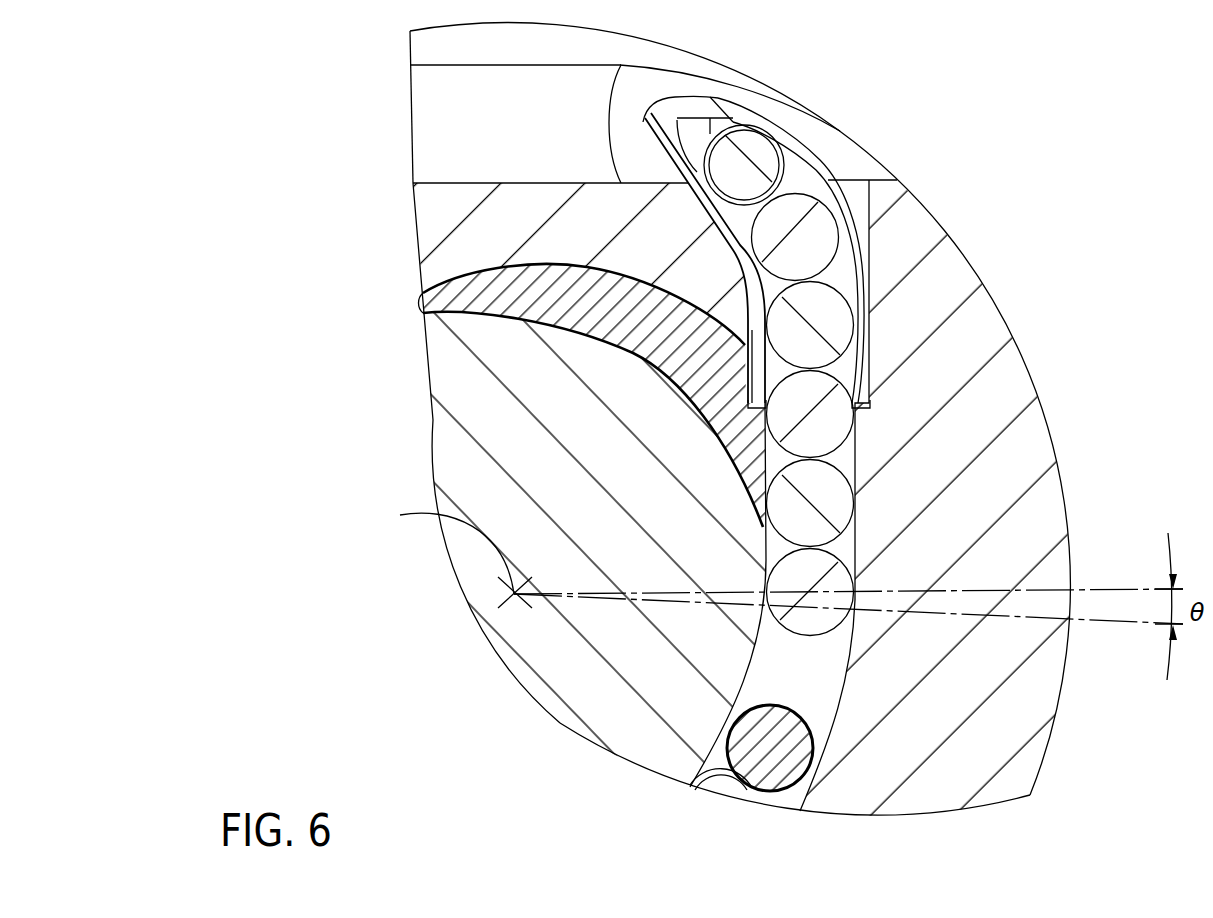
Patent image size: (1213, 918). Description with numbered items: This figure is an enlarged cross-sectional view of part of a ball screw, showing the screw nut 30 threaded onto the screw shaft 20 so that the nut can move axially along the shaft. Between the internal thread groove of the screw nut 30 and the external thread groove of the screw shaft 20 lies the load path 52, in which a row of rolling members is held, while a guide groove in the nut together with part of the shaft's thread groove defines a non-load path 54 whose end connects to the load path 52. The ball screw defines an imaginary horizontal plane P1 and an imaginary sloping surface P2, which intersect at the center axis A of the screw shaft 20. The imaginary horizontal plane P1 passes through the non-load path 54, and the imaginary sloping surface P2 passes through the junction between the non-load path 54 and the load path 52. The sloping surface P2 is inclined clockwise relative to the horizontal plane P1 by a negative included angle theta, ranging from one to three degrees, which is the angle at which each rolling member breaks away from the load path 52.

The screw shaft 20 is at (567, 668).
The screw nut 30 is at (975, 258).
The load path 52 is at (825, 692).
The non-load path 54 is at (847, 547).
The center axis A is at (400, 515).
The imaginary horizontal plane P1 is at (1087, 594).
The imaginary sloping surface P2 is at (1087, 594).